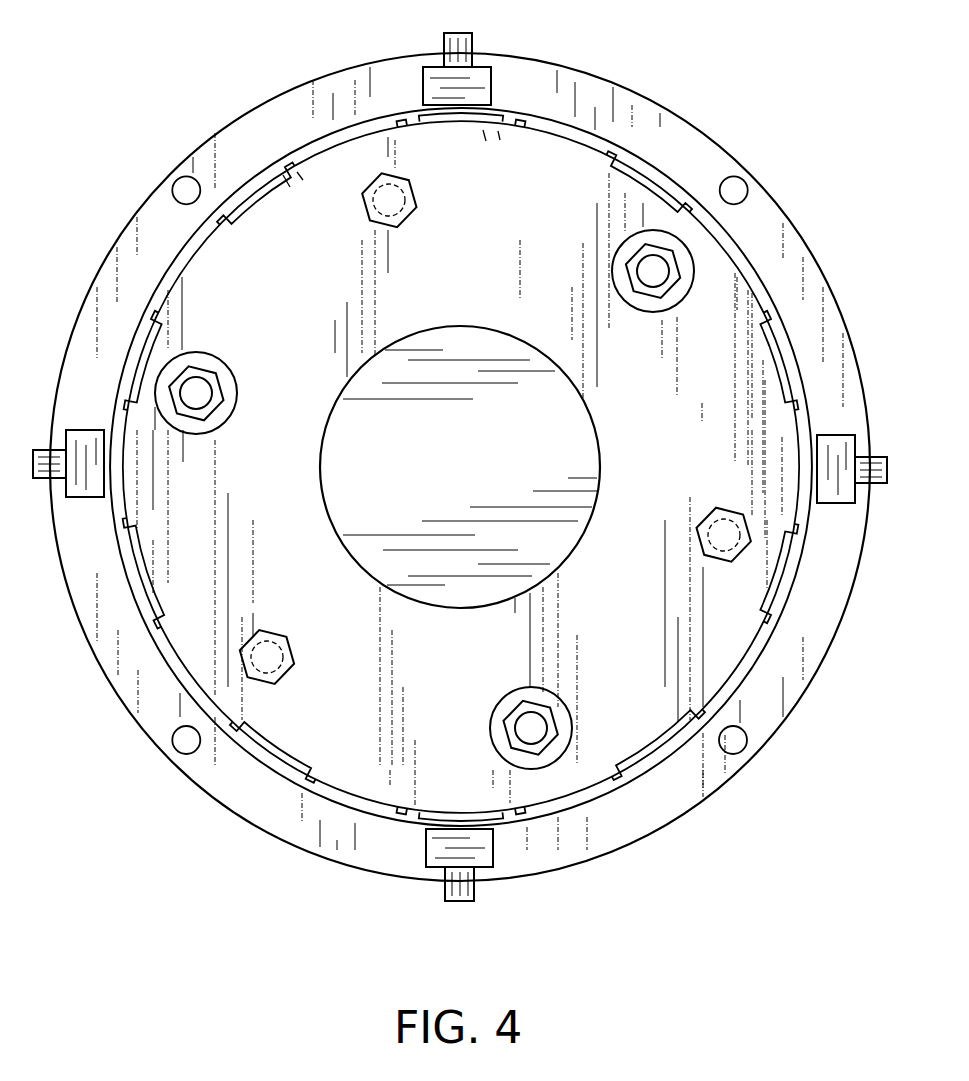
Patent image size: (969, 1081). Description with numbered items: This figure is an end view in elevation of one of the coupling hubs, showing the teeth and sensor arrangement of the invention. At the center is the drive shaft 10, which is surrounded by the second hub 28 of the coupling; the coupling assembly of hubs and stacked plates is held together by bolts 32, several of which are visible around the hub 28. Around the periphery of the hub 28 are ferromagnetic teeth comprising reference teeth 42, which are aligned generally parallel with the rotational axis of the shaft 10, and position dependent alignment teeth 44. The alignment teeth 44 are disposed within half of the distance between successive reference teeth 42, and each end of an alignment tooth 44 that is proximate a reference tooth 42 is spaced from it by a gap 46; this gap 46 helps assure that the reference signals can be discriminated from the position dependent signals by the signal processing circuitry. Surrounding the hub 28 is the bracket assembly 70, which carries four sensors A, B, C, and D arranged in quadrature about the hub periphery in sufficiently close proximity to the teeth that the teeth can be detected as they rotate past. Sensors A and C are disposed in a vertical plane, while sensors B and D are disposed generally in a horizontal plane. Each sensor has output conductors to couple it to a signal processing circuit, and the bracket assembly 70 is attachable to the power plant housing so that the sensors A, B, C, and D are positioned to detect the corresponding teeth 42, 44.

The drive shaft 10 is at (455, 476).
The second hub 28 is at (502, 263).
The bolts 32 is at (196, 372).
The reference teeth 42 is at (507, 118).
The position dependent alignment teeth 44 is at (245, 182).
The gap 46 is at (297, 181).
The bracket assembly 70 is at (757, 705).
The sensor A is at (423, 88).
The sensor B is at (833, 473).
The sensor C is at (447, 845).
The sensor D is at (88, 472).